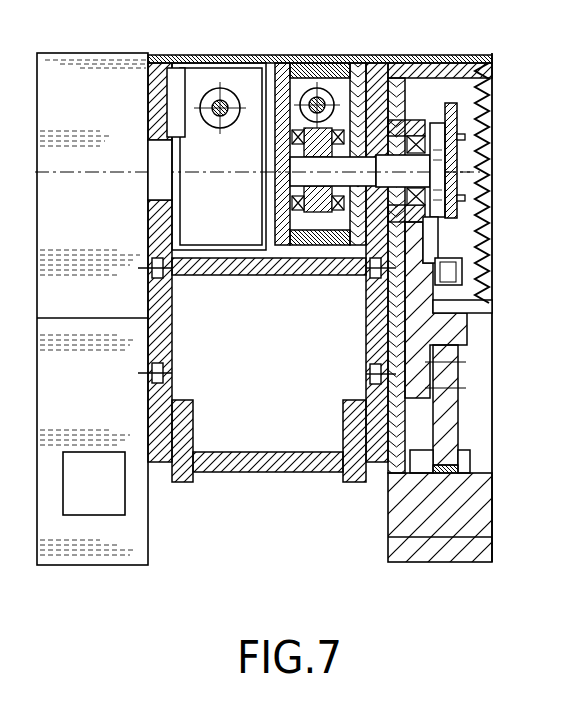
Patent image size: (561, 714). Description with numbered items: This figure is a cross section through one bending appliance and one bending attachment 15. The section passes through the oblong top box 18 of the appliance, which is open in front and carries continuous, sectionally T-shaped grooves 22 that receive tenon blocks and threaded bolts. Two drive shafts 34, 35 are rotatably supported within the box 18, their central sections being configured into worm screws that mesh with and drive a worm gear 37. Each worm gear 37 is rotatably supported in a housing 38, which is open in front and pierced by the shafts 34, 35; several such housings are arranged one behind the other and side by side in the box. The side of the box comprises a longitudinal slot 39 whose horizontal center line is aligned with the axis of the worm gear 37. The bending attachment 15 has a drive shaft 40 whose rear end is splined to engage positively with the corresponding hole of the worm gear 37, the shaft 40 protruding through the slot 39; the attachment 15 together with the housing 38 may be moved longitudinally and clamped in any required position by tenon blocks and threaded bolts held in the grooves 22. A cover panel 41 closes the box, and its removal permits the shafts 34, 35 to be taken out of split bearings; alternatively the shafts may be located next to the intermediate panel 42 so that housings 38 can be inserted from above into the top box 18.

The bending attachment 15 is at (97, 131).
The top box 18 is at (261, 477).
The T-shaped grooves 22 is at (366, 290).
The drive shaft 34 is at (220, 128).
The drive shaft 35 is at (322, 102).
The worm gear 37 is at (312, 232).
The worm gear housing 38 is at (222, 240).
The longitudinal slot 39 is at (150, 190).
The drive shaft 40 is at (410, 167).
The cover panel 41 is at (306, 57).
The intermediate panel 42 is at (258, 268).